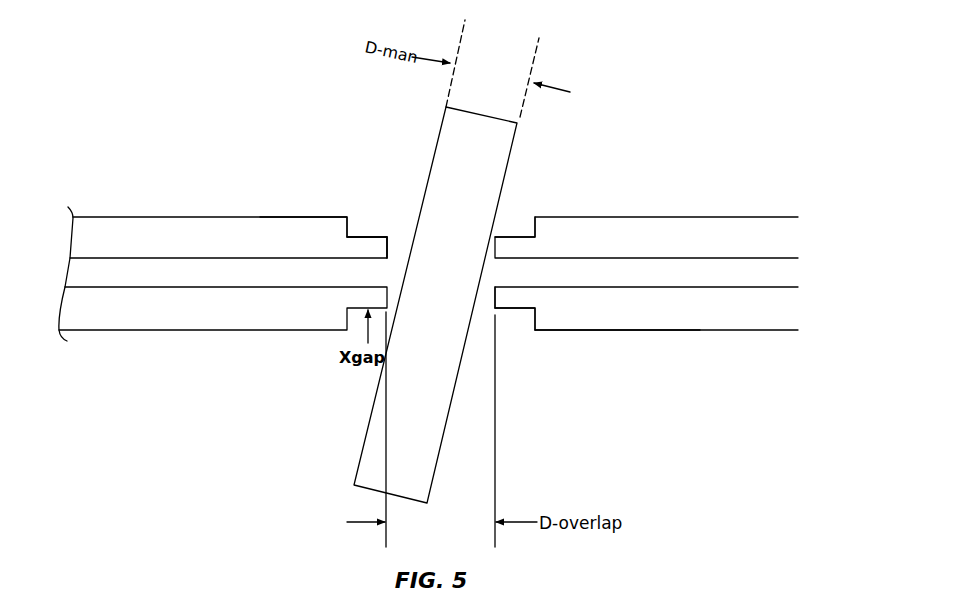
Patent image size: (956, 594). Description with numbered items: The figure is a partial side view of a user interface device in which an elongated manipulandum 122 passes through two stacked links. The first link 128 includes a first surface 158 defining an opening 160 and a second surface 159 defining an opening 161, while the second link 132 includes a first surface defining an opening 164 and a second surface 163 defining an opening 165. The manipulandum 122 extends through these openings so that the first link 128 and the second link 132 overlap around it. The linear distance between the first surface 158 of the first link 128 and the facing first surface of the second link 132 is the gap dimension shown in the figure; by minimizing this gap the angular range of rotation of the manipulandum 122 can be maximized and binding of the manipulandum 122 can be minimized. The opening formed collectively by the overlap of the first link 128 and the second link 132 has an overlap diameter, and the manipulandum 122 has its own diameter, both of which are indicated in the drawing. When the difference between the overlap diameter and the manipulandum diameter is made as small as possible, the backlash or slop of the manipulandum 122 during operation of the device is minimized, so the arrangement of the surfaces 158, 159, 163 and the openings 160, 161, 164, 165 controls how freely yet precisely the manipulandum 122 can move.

The manipulandum 122 is at (515, 136).
The first link 128 is at (148, 212).
The second link 132 is at (148, 336).
The first surface 158 is at (512, 235).
The second surface 159 is at (278, 215).
The opening 160 is at (393, 255).
The opening 161 is at (368, 236).
The second surface 163 is at (595, 332).
The opening 164 is at (488, 290).
The opening 165 is at (513, 318).